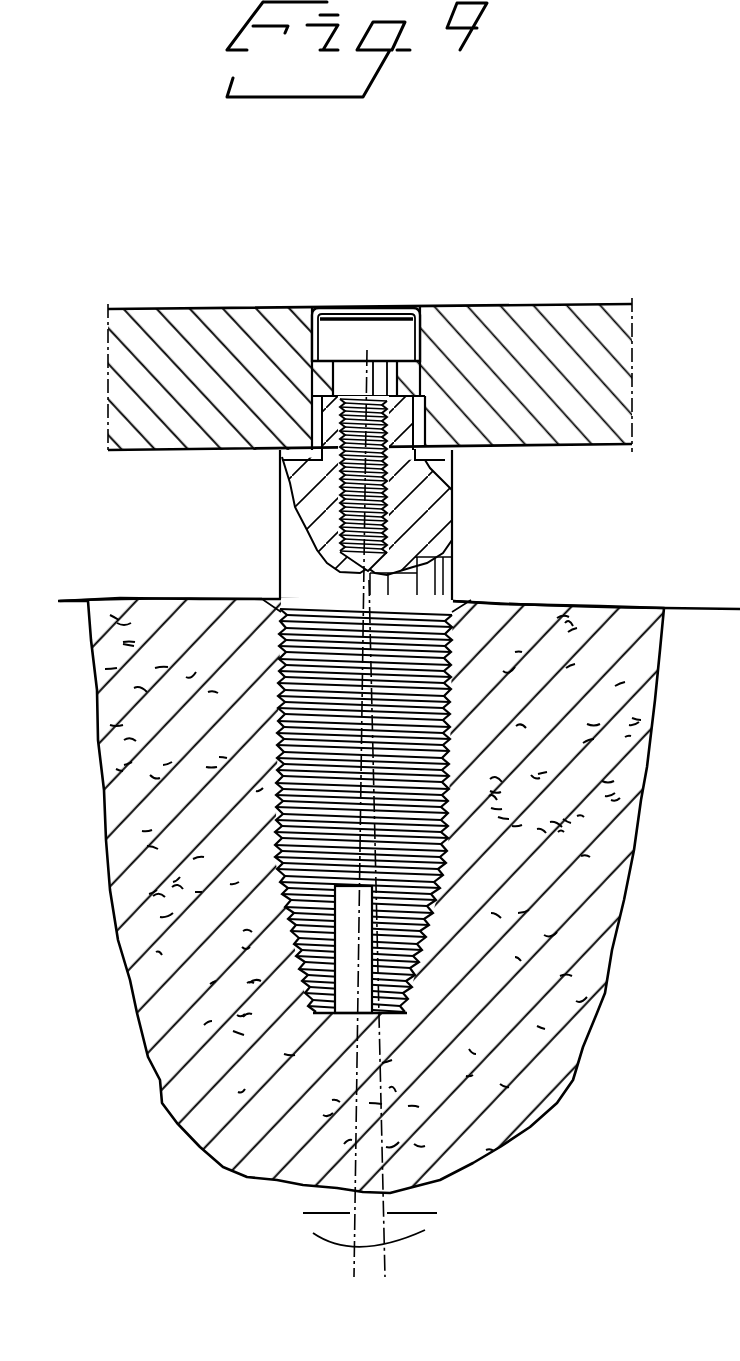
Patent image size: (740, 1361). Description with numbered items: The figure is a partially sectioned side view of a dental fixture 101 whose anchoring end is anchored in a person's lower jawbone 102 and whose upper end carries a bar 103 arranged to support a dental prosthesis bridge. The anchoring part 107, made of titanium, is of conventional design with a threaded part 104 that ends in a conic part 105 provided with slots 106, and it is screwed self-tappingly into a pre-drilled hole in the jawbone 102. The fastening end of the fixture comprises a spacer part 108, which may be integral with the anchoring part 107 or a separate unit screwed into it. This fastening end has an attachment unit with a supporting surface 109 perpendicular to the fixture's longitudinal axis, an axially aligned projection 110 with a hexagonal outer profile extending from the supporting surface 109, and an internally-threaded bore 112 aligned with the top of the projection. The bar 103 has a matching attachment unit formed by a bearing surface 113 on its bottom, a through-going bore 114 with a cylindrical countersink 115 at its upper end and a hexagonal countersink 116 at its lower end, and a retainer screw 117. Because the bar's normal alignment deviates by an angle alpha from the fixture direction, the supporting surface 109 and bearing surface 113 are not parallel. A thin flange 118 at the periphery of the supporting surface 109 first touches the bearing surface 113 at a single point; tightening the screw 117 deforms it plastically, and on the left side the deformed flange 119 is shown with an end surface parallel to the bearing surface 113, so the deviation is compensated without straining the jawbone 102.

The fixture 101 is at (580, 548).
The lower jawbone 102 is at (133, 797).
The bar 103 is at (566, 317).
The threaded part 104 is at (290, 606).
The conic part 105 is at (428, 930).
The slots 106 is at (380, 1017).
The anchoring part 107 is at (450, 748).
The spacer part 108 is at (442, 530).
The supporting surface 109 is at (455, 480).
The projection 110 is at (333, 422).
The internally-threaded bore 112 is at (330, 515).
The bearing surface 113 is at (457, 505).
The through-going bore 114 is at (355, 352).
The cylindrical countersink 115 is at (417, 307).
The hexagonal countersink 116 is at (426, 402).
The retainer screw 117 is at (380, 328).
The flange 118 is at (452, 456).
The flange 119 is at (282, 461).